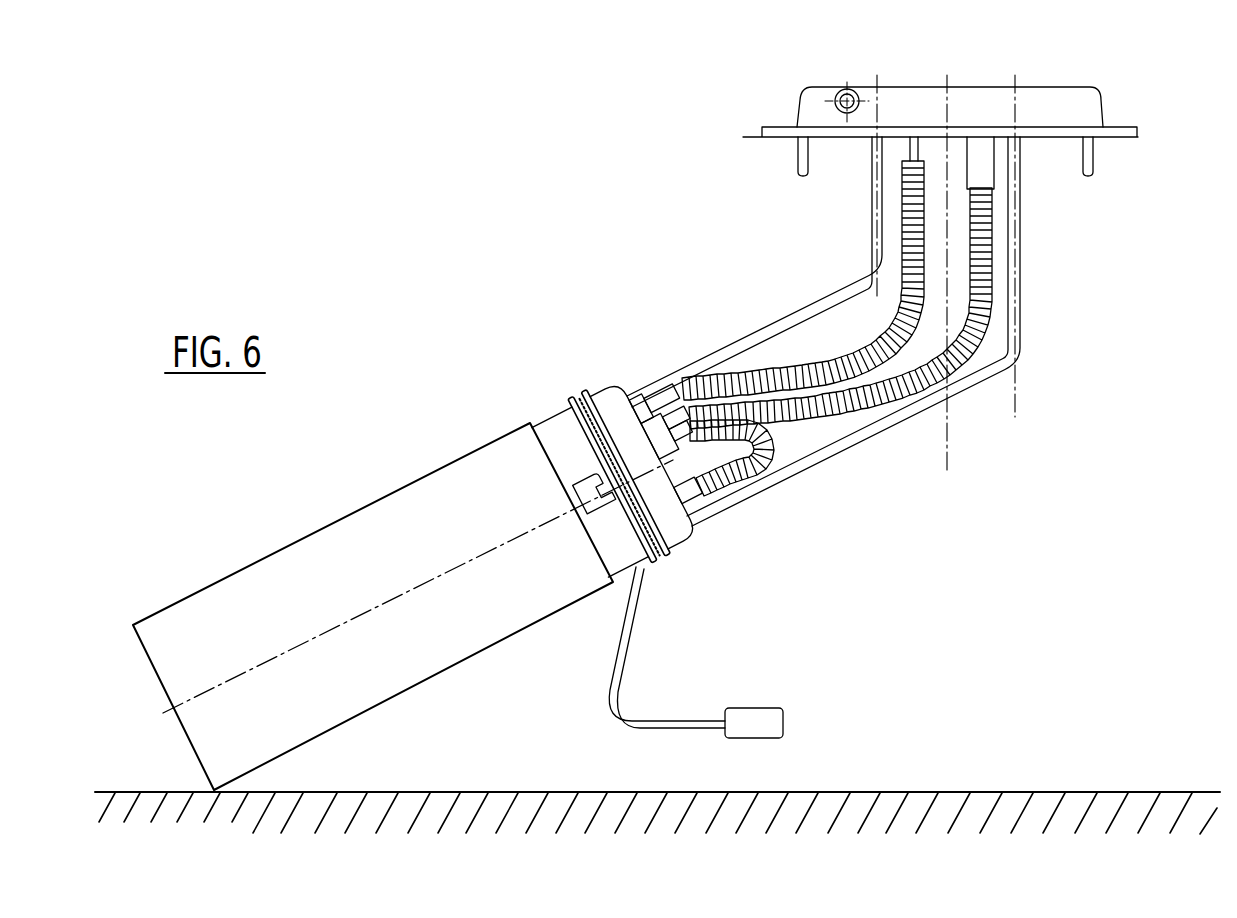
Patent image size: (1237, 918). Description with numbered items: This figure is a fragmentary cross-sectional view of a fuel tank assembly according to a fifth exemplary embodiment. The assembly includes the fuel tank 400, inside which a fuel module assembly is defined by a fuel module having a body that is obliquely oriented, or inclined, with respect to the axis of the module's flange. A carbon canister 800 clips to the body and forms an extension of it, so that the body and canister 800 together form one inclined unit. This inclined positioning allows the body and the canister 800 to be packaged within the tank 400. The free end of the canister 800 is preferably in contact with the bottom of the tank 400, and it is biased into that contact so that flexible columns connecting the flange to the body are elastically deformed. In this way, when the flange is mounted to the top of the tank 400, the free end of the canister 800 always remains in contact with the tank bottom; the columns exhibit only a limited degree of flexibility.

The carbon canister 800 is at (488, 622).
The fuel tank 400 is at (946, 788).